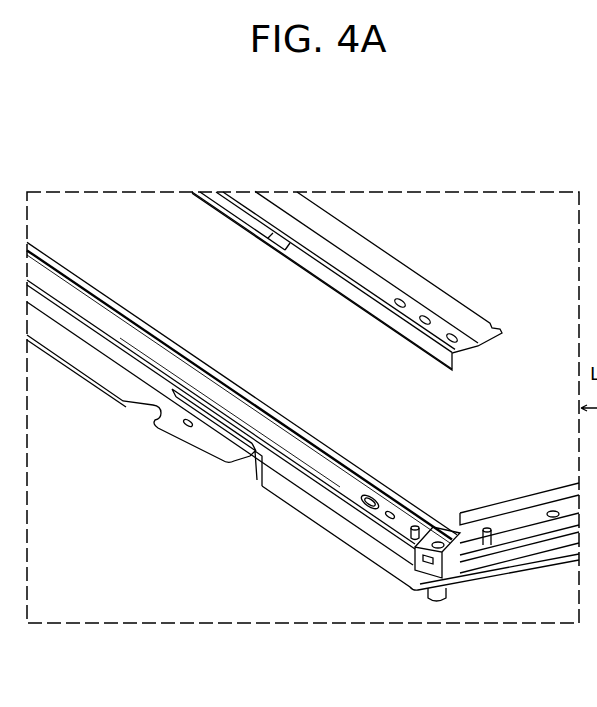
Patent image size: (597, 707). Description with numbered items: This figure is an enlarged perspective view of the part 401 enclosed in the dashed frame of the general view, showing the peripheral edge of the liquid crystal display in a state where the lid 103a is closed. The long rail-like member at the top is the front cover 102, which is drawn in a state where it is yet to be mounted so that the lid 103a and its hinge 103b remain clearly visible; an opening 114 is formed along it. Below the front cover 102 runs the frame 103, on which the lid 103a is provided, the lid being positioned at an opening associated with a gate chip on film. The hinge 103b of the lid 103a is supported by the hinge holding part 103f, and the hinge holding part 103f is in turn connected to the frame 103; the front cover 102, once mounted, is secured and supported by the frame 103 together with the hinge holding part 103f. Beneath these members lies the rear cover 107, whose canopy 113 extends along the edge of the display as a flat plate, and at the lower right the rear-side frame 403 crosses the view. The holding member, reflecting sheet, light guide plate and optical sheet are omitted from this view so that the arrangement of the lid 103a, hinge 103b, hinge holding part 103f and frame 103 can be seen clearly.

The front cover 102 is at (353, 233).
The frame 103 is at (122, 332).
The lid 103a is at (264, 422).
The hinge 103b is at (217, 430).
The hinge holding part 103f is at (172, 420).
The rear cover 107 is at (480, 572).
The canopy of the rear cover 113 is at (70, 368).
The opening 114 is at (267, 238).
The part enclosed in the dashed frame 401 is at (70, 625).
The rear-side frame 403 is at (537, 542).